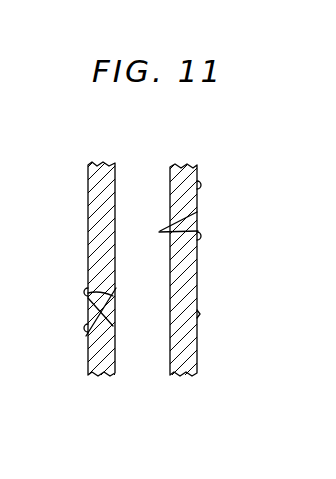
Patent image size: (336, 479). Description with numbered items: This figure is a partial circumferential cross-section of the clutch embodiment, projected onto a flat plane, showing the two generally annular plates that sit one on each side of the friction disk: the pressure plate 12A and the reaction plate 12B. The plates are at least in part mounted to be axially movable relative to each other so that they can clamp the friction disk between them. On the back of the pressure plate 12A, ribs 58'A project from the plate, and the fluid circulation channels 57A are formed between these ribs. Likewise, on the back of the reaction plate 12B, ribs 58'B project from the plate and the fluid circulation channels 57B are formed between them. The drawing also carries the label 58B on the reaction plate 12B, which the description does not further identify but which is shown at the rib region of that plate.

The pressure plate 12A is at (88, 166).
The reaction plate 12B is at (197, 162).
The fluid circulation channels 57A is at (113, 296).
The fluid circulation channels 57B is at (162, 233).
The ribs 58'A is at (51, 262).
The ribs 58'B is at (224, 210).
The contact of second substrate 58B is at (198, 314).